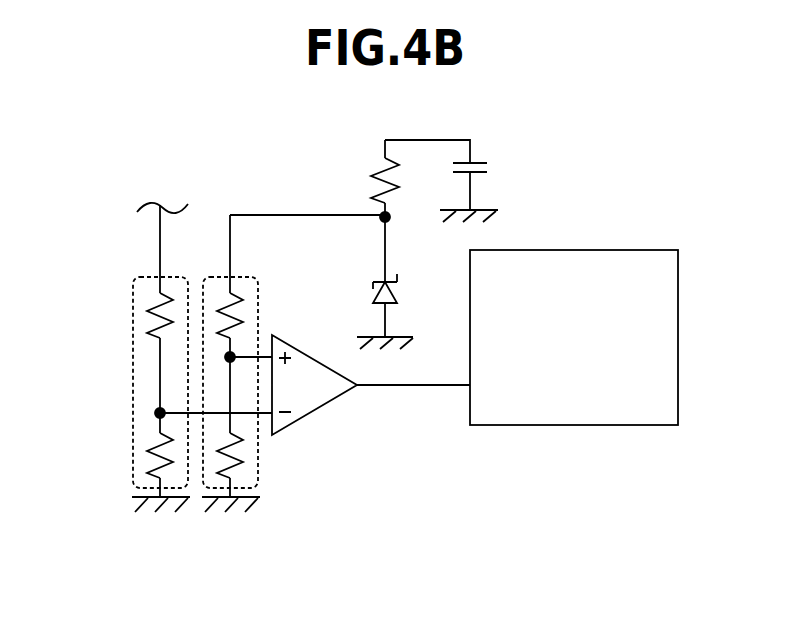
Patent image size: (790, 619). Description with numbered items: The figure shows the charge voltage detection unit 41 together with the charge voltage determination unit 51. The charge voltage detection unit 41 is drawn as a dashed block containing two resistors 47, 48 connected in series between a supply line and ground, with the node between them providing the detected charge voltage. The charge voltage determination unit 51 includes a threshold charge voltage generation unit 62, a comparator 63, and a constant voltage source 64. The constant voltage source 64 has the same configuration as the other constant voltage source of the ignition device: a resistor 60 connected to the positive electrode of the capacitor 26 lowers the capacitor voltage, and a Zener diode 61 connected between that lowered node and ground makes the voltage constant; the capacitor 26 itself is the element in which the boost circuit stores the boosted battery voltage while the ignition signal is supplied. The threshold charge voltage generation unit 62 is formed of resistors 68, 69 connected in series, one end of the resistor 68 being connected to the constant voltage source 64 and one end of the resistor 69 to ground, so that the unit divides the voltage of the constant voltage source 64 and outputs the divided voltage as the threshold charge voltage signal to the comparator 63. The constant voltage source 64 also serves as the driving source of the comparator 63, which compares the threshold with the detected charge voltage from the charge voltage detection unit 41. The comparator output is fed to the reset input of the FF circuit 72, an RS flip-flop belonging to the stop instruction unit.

The charge voltage determination unit 51 is at (249, 160).
The charge voltage detection unit 41 is at (132, 471).
The resistor 47 is at (150, 305).
The resistor 48 is at (150, 445).
The threshold charge voltage generation unit 62 is at (260, 473).
The resistor 68 is at (245, 313).
The resistor 69 is at (243, 438).
The comparator 63 is at (330, 390).
The resistor 60 is at (374, 170).
The capacitor 26 is at (473, 163).
The constant voltage source 64 is at (398, 222).
The Zener diode 61 is at (398, 292).
The FF circuit 72 is at (617, 272).